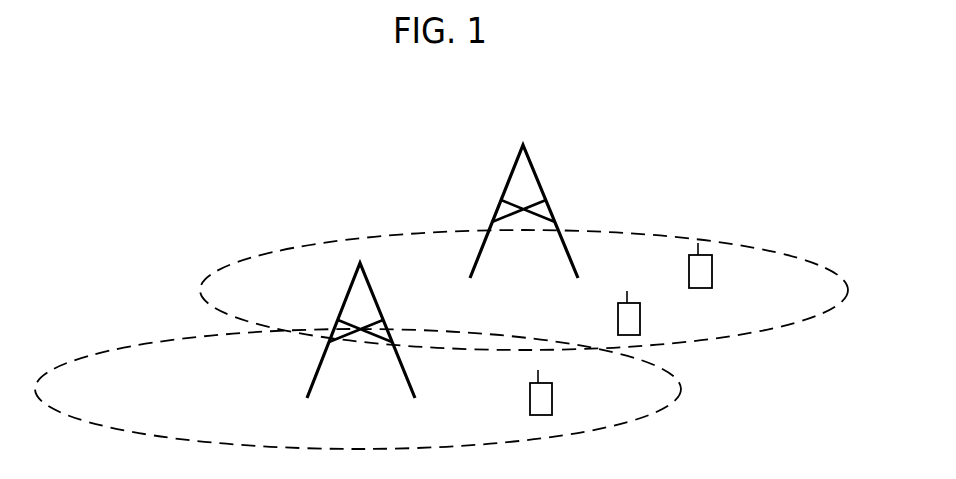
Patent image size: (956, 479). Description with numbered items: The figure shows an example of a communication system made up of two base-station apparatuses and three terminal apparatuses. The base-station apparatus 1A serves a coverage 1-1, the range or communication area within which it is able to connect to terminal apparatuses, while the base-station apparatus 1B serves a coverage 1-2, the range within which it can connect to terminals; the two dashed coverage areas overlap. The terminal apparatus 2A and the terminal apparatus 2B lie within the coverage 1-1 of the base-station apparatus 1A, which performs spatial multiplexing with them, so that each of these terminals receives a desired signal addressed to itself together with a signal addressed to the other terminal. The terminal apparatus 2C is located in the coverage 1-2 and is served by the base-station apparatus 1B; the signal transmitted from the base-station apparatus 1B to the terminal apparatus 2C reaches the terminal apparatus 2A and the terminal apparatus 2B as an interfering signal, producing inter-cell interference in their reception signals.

The coverage 1-1 is at (285, 250).
The coverage 1-2 is at (136, 345).
The base-station apparatus 1A is at (514, 159).
The base-station apparatus 1B is at (346, 294).
The terminal apparatus 2A is at (712, 264).
The terminal apparatus 2B is at (640, 311).
The terminal apparatus 2C is at (552, 390).